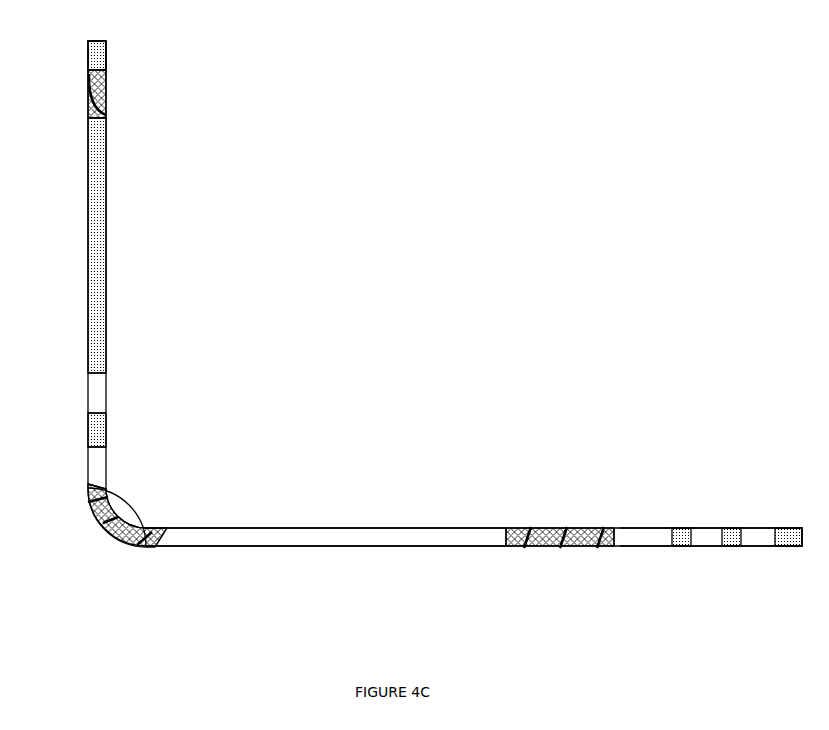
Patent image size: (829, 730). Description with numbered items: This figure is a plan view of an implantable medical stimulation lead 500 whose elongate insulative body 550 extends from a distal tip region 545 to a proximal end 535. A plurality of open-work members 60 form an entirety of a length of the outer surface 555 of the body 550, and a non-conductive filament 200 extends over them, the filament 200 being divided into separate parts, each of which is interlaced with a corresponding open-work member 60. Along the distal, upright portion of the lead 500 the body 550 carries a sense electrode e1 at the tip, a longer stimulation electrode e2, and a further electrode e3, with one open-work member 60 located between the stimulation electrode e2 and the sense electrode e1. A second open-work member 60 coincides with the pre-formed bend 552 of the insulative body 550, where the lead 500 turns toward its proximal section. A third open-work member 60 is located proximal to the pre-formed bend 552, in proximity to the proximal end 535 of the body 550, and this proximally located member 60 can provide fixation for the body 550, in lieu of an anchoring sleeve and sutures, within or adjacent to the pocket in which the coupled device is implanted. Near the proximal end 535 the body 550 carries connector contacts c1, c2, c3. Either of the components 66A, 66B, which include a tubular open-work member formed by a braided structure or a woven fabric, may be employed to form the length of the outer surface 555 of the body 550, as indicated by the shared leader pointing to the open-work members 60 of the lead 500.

The distal tip 545 is at (113, 42).
The sense electrode e1 is at (106, 51).
The stimulation electrode e2 is at (102, 262).
The third electrode e3 is at (95, 432).
The outer surface 555 is at (105, 83).
The non-conductive filament 200 is at (107, 110).
The open-work member 60 is at (88, 112).
The implantable medical stimulation lead 500 is at (444, 233).
The pre-formed bend 552 is at (78, 544).
The elongate insulative body 550 is at (275, 535).
The proximal end 535 is at (714, 413).
The first contact c1 is at (787, 533).
The second contact c2 is at (674, 530).
The third contact c3 is at (732, 533).
The component 66A is at (163, 557).
The component 66B is at (503, 537).